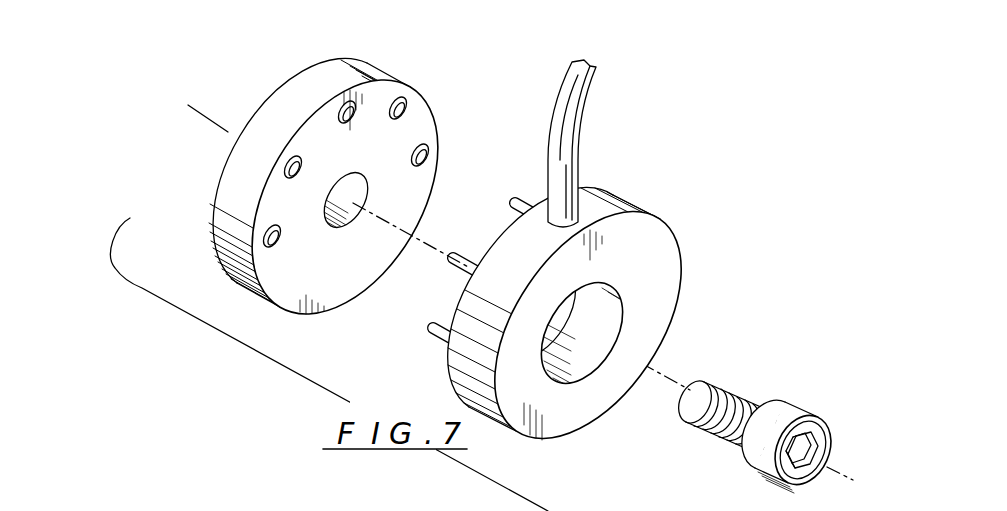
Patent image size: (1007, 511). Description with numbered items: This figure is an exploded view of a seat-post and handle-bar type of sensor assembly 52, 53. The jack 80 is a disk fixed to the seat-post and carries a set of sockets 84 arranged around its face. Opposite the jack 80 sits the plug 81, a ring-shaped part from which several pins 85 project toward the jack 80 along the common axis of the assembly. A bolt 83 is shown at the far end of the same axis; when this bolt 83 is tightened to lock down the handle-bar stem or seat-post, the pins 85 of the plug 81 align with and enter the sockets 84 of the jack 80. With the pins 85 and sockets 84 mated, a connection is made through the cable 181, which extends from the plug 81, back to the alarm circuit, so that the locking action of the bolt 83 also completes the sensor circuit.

The drive assembly 52 is at (511, 257).
The drive assembly 53 is at (511, 259).
The jack 80 is at (323, 185).
The plug 81 is at (652, 249).
The bolt 83 is at (790, 412).
The sockets 84 is at (287, 169).
The pins 85 is at (458, 257).
The cable 181 is at (572, 124).